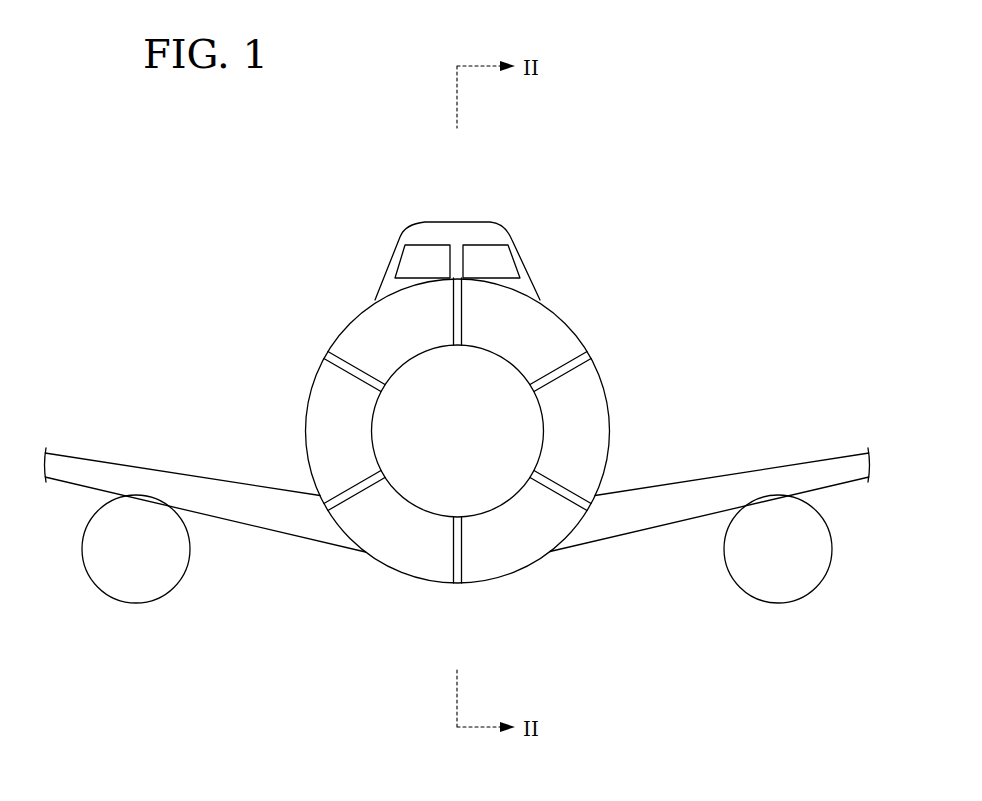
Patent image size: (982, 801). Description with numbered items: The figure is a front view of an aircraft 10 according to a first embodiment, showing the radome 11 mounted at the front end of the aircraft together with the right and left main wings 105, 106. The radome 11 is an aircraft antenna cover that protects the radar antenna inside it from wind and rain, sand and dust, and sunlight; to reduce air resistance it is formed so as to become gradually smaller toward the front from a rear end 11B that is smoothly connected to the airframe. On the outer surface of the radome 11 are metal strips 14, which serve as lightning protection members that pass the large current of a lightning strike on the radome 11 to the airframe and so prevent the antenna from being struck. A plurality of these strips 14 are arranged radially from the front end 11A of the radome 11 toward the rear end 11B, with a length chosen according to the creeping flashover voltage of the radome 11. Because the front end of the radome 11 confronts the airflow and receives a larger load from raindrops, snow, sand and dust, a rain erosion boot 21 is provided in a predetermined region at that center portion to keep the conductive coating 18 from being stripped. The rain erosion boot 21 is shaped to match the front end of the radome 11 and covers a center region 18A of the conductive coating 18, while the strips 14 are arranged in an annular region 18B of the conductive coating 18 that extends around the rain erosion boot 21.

The aircraft 10 is at (600, 234).
The radome 11 is at (588, 320).
The front end of the radome 11A is at (398, 356).
The rear end of the radome 11B is at (298, 376).
The strips 14 is at (462, 305).
The conductive coating 18 is at (480, 575).
The center region of the conductive coating 18A is at (485, 488).
The annular region of the conductive coating 18B is at (393, 558).
The rain erosion boot 21 is at (545, 443).
The right main wing 105 is at (805, 458).
The left main wing 106 is at (113, 462).